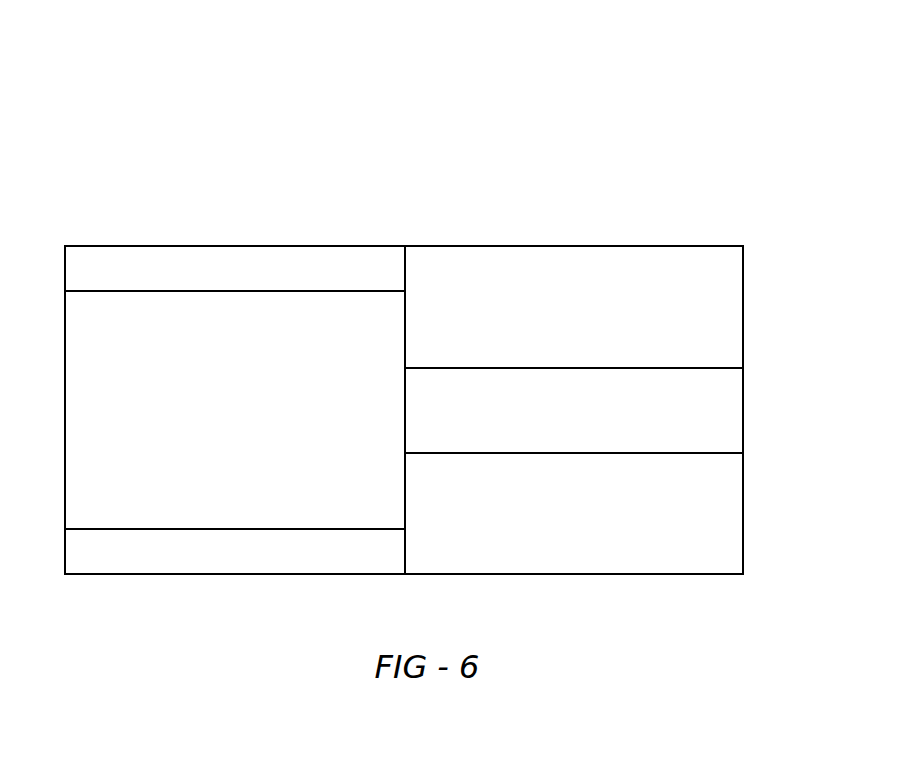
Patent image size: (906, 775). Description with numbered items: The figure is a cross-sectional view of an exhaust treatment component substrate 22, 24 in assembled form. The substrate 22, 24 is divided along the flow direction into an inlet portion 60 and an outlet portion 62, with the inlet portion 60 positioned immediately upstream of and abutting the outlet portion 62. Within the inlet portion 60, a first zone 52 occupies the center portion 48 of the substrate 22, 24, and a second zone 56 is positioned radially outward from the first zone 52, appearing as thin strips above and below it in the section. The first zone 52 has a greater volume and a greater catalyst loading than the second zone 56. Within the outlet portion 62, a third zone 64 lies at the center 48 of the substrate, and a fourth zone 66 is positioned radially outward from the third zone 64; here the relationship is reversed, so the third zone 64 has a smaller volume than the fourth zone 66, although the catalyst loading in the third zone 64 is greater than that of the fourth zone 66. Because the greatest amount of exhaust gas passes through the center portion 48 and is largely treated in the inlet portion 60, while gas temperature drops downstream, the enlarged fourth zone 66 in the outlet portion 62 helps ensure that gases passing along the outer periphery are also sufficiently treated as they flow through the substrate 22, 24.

The exhaust treatment component substrate 22 is at (431, 291).
The exhaust treatment component substrate 24 is at (733, 115).
The center portion 48 is at (65, 403).
The first zone 52 is at (215, 421).
The second zone 56 is at (215, 283).
The inlet portion 60 is at (62, 205).
The outlet portion 62 is at (406, 203).
The third zone 64 is at (564, 418).
The fourth zone 66 is at (563, 318).